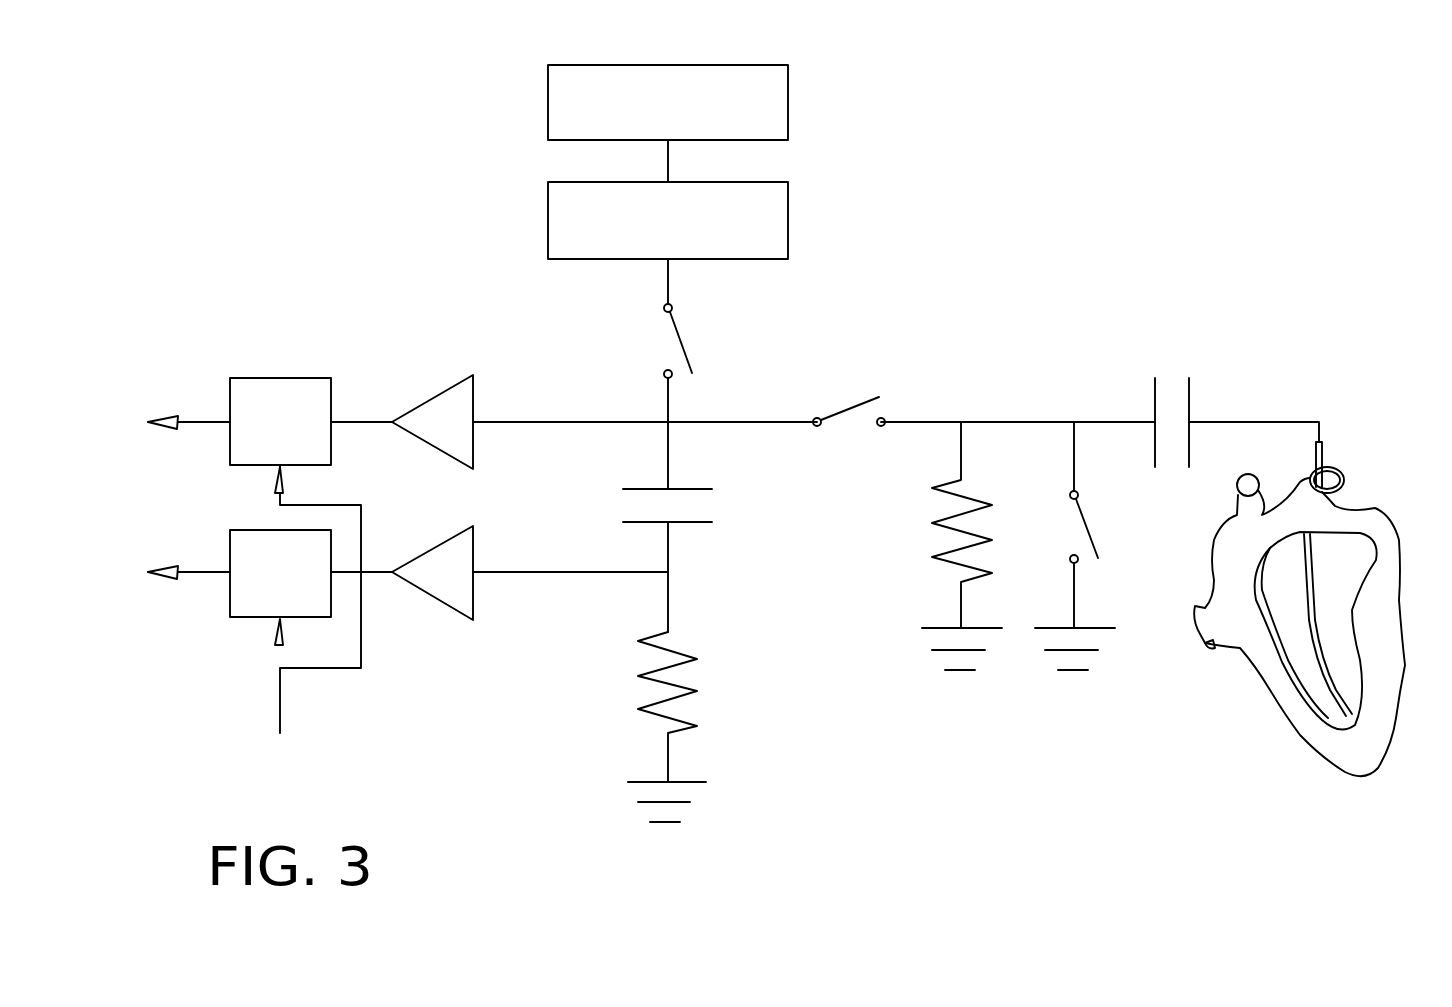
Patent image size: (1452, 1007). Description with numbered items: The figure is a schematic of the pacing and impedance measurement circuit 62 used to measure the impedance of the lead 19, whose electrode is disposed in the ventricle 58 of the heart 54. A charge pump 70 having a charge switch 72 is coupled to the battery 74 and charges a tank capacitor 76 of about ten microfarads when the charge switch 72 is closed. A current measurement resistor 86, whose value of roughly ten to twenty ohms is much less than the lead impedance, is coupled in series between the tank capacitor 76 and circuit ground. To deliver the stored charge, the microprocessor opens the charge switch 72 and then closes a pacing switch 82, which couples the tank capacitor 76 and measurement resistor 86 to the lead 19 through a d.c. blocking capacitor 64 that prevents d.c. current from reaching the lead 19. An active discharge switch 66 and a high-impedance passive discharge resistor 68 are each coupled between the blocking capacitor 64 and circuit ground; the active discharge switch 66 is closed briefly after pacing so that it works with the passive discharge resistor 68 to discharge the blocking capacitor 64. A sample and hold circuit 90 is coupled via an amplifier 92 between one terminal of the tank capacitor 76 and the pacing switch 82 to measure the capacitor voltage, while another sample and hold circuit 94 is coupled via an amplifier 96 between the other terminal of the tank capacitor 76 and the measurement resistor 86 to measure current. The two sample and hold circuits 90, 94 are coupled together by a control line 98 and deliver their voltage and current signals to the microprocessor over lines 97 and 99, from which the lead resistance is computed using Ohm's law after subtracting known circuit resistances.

The battery 74 is at (777, 122).
The charge pump 70 is at (777, 223).
The charge switch 72 is at (680, 334).
The tank capacitor 76 is at (687, 525).
The current measurement resistor 86 is at (687, 685).
The pacing switch 82 is at (820, 415).
The passive discharge resistor 68 is at (923, 546).
The active discharge switch 66 is at (1087, 523).
The impedance measurement circuit 62 is at (992, 345).
The d.c. blocking capacitor 64 is at (1150, 412).
The lead 19 is at (1233, 422).
The heart 54 is at (1352, 523).
The ventricle 58 is at (1332, 743).
The sample and hold circuit 90 is at (258, 382).
The sample and hold circuit 94 is at (248, 613).
The amplifier 92 is at (427, 410).
The amplifier 96 is at (440, 597).
The control line 98 is at (280, 717).
The line 97 is at (193, 420).
The line 99 is at (198, 572).